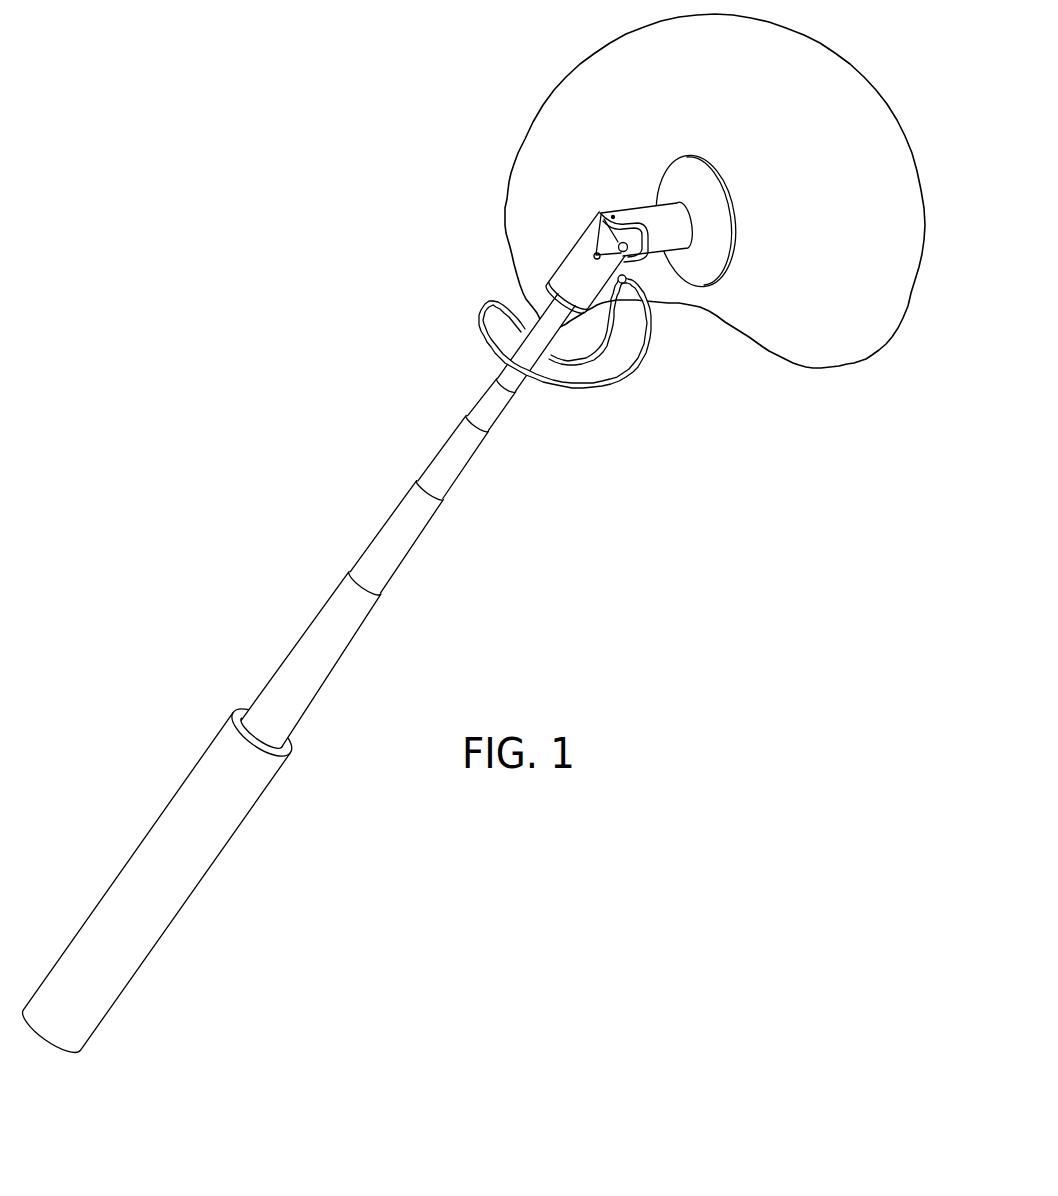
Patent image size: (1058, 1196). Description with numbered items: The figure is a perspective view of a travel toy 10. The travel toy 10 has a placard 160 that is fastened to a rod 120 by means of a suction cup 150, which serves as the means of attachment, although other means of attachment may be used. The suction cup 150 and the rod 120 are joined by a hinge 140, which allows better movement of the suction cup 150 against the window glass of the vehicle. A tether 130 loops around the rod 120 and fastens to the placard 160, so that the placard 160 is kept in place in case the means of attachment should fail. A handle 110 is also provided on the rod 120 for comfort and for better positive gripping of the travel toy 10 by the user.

The travel toy 10 is at (430, 566).
The handle 110 is at (167, 848).
The rod 120 is at (322, 600).
The tether 130 is at (477, 337).
The hinge 140 is at (557, 275).
The suction cup 150 is at (698, 267).
The placard 160 is at (577, 160).